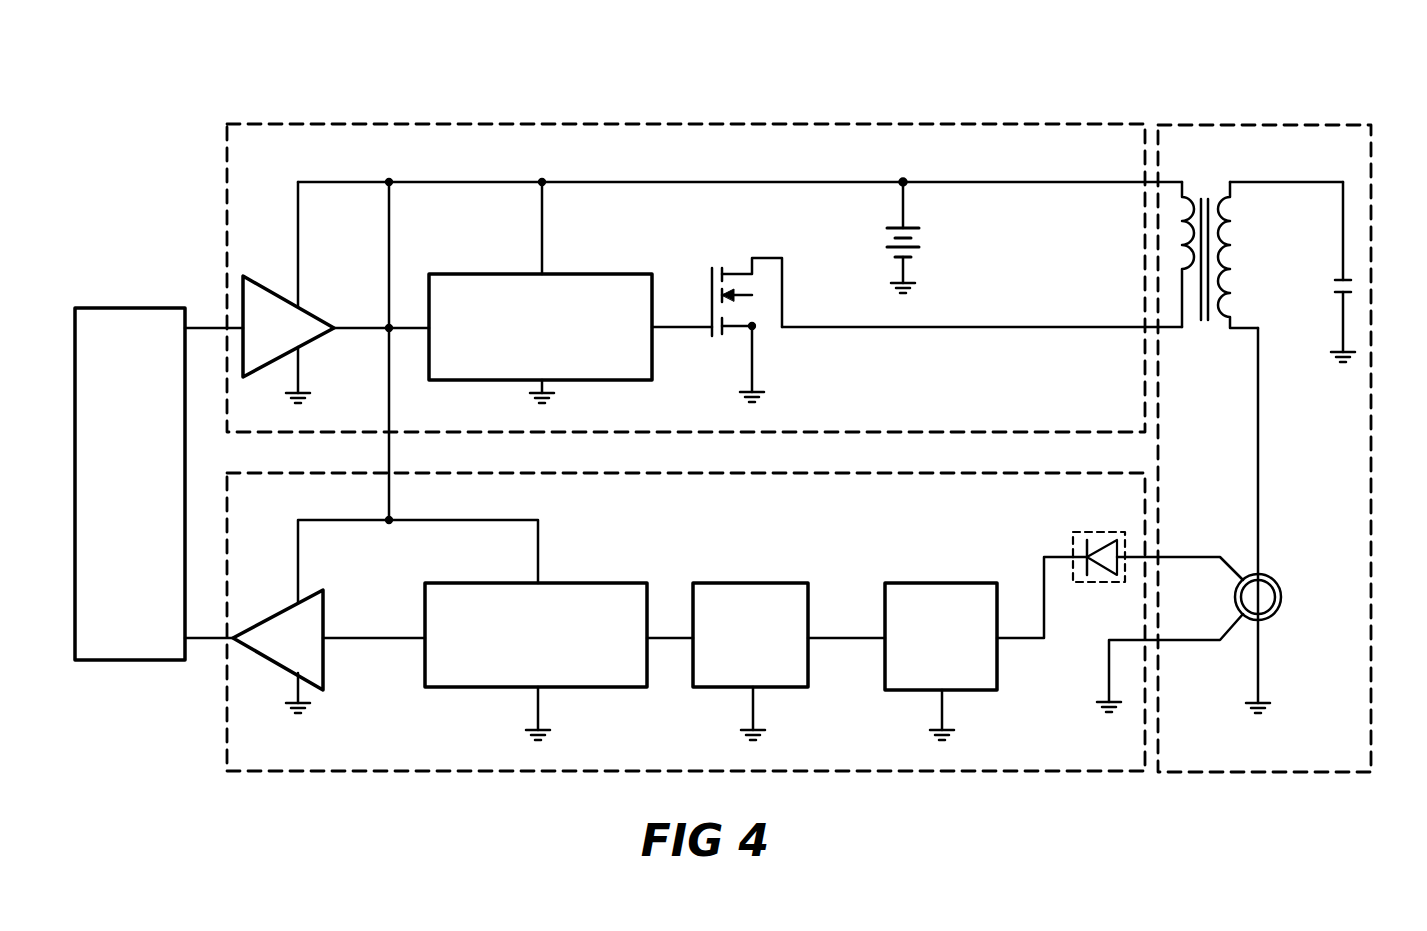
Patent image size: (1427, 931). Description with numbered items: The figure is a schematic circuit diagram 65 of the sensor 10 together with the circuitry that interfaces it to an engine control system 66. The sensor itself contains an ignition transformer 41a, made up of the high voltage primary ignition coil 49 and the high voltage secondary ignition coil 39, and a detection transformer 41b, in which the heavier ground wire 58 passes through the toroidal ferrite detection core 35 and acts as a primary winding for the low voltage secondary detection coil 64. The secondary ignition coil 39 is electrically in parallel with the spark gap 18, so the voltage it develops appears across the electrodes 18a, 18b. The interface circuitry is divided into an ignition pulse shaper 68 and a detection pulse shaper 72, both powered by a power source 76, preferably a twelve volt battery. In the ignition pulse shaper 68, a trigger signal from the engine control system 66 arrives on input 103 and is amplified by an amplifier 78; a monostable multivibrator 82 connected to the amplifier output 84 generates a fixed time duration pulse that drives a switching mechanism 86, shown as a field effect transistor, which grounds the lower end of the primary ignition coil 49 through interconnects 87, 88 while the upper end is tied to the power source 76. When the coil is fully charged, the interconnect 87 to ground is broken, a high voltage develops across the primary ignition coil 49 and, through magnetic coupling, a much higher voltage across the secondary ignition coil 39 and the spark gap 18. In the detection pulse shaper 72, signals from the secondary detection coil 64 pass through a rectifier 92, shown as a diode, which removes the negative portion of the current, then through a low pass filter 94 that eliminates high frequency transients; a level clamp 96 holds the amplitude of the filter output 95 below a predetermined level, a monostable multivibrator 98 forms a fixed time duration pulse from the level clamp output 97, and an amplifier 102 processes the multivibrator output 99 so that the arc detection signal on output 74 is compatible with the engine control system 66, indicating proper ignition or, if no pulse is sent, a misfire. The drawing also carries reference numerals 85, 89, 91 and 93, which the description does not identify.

The sensor 10 is at (1282, 125).
The spark gap 18 is at (1346, 272).
The spark gap electrode 18a is at (1348, 280).
The spark gap electrode 18b is at (1347, 293).
The toroidal ferrite detection core 35 is at (1280, 578).
The high voltage secondary ignition coil 39 is at (1221, 168).
The ignition transformer 41a is at (1208, 332).
The detection transformer 41b is at (1278, 622).
The high voltage primary ignition coil 49 is at (1181, 168).
The ground wire 58 is at (1258, 511).
The low voltage secondary detection coil 64 is at (1216, 582).
The schematic circuit diagram 65 is at (1158, 62).
The engine control system 66 is at (125, 661).
The ignition pulse shaper 68 is at (782, 124).
The detection pulse shaper 72 is at (1015, 772).
The arc detection output 74 is at (207, 640).
The power source 76 is at (880, 238).
The amplifier 78 is at (272, 296).
The monostable multivibrator 82 is at (588, 274).
The amplifier output 84 is at (356, 328).
The gate conductor 85 is at (686, 328).
The switching mechanism 86 is at (800, 292).
The interconnect 87 is at (756, 360).
The interconnect 88 is at (993, 327).
The diode 89 is at (1125, 557).
The ground connection 91 is at (1106, 690).
The rectifier 92 is at (1068, 540).
The diode output conductor 93 is at (1032, 640).
The low pass filter 94 is at (935, 583).
The low pass filter output 95 is at (848, 640).
The level clamp 96 is at (758, 583).
The level clamp output 97 is at (672, 640).
The monostable multivibrator 98 is at (583, 583).
The monostable multivibrator output 99 is at (376, 640).
The amplifier 102 is at (308, 603).
The ignition pulse shaper input 103 is at (206, 328).